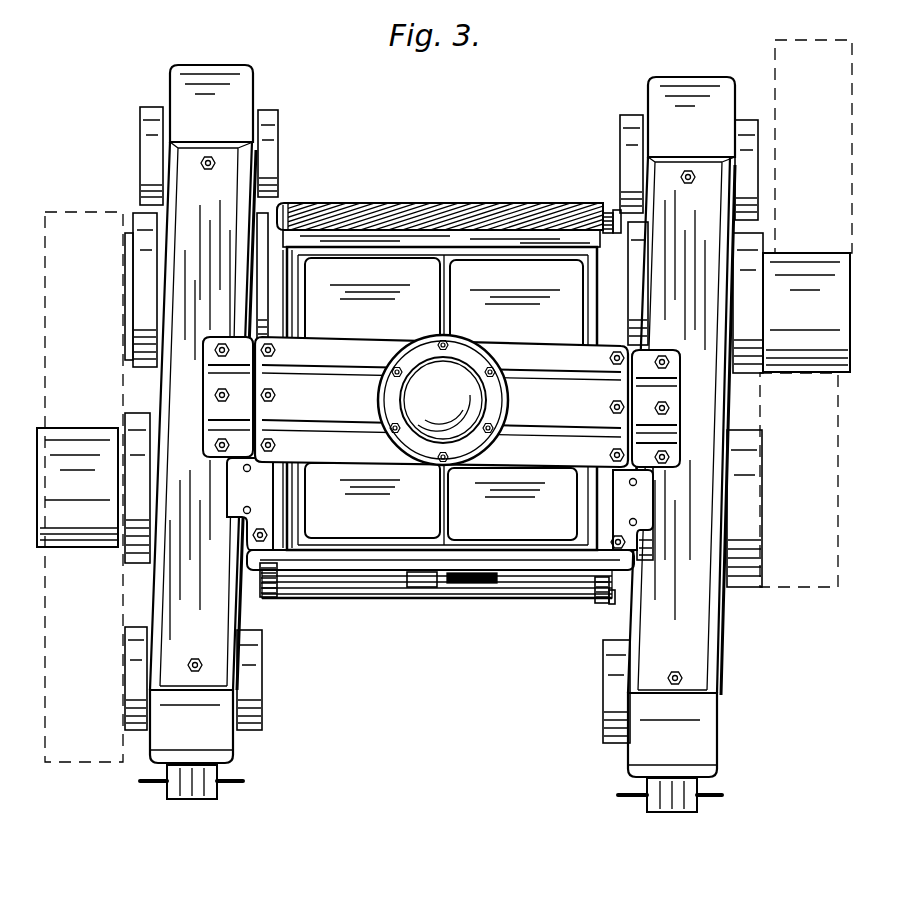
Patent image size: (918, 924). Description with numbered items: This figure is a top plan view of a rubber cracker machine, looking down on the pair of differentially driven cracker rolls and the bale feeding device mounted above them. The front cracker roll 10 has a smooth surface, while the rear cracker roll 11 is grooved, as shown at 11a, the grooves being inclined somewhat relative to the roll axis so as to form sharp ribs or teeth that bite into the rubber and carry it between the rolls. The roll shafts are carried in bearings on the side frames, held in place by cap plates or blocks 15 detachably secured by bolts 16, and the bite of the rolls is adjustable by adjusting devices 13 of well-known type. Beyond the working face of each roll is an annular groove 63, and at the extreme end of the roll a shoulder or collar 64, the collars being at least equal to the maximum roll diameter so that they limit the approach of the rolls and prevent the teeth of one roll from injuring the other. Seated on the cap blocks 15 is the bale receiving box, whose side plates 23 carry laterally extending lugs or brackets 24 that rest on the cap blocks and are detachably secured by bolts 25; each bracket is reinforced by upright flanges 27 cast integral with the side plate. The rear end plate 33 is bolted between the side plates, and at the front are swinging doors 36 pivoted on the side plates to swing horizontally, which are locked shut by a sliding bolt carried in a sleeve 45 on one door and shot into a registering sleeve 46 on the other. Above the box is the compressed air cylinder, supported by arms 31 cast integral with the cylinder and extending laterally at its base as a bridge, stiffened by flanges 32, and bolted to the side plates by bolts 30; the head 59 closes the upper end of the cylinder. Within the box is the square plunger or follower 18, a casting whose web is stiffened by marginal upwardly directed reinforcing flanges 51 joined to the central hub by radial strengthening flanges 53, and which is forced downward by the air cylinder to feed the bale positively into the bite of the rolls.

The front cracker roll 10 is at (398, 600).
The rear cracker roll 11 is at (440, 203).
The grooves 11a is at (500, 215).
The adjusting devices 13 is at (673, 803).
The cap plates or blocks 15 is at (442, 421).
The bolts 16 is at (204, 663).
The plunger or follower 18 is at (512, 504).
The side plates 23 is at (282, 307).
The lugs or brackets 24 is at (667, 392).
The bolts 25 is at (668, 467).
The upright flanges 27 is at (232, 365).
The bolts 30 is at (608, 358).
The supporting arms 31 is at (520, 358).
The flanges 32 is at (550, 373).
The rear end plate 33 is at (433, 240).
The swinging doors 36 is at (553, 572).
The sleeve 45 is at (450, 598).
The registering sleeve 46 is at (423, 590).
The reinforcing flanges 51 is at (298, 507).
The radial strengthening flanges 53 is at (372, 500).
The head 59 is at (443, 400).
The annular groove 63 is at (602, 600).
The shoulder or collar 64 is at (612, 598).